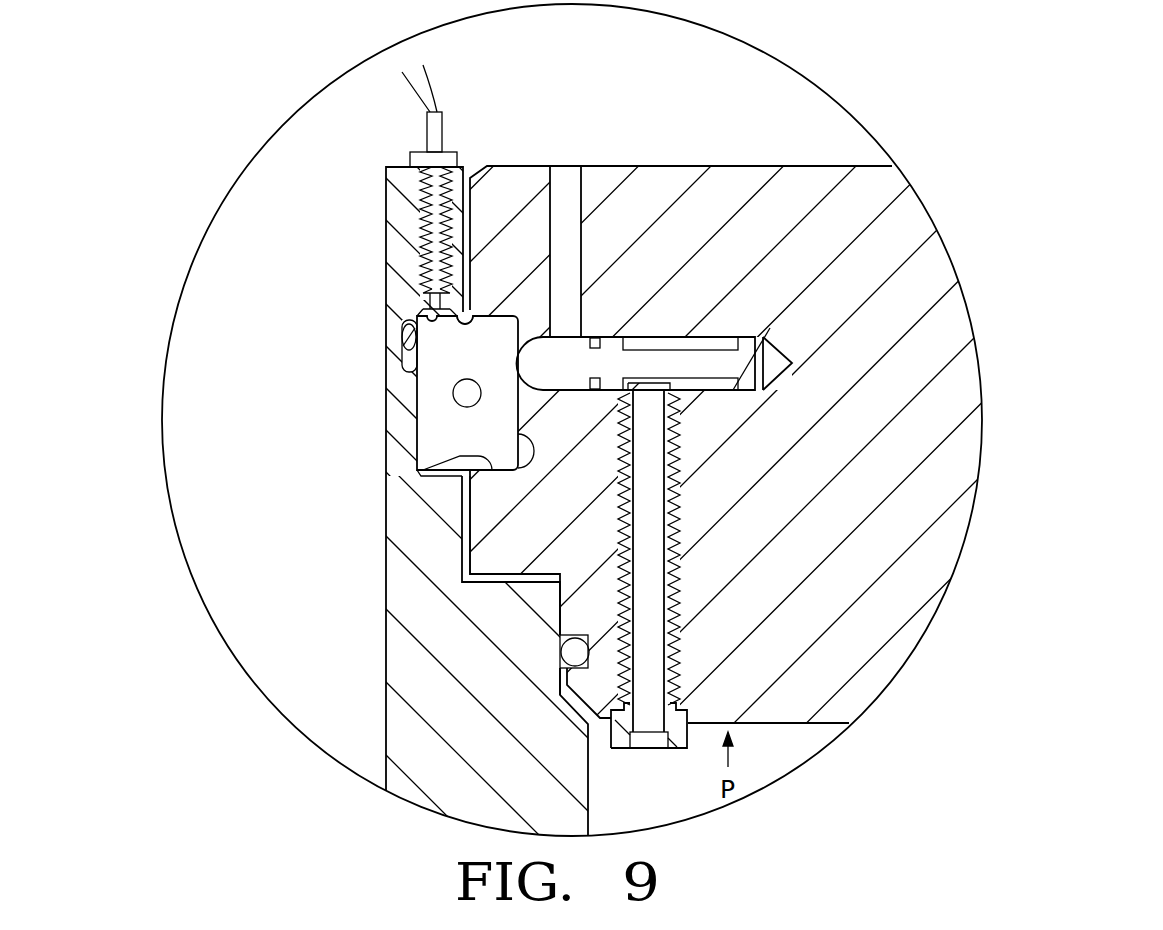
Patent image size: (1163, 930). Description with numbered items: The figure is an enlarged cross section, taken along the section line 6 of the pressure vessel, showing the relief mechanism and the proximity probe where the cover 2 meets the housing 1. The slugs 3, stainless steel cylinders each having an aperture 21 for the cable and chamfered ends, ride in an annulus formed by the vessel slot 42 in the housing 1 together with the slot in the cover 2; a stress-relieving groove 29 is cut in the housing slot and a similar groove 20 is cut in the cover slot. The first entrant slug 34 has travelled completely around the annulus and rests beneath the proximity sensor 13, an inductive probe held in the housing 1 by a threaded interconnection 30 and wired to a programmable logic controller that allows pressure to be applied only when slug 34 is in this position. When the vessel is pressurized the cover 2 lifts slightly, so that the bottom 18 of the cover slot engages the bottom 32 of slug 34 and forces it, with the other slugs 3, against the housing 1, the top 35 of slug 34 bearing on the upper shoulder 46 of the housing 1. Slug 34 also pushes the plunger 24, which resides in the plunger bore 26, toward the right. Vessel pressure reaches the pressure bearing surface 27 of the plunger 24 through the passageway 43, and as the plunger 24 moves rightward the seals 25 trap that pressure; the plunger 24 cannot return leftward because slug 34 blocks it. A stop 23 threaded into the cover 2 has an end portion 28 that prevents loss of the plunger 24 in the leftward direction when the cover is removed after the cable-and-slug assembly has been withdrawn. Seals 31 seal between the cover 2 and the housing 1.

The housing 1 is at (400, 213).
The cover 2 is at (905, 505).
The slugs 3 is at (433, 446).
The section line 6 is at (549, 185).
The proximity sensor 13 is at (445, 150).
The bottom of cover slot 18 is at (447, 463).
The groove 20 is at (517, 445).
The aperture 21 is at (455, 396).
The stop 23 is at (621, 738).
The plunger 24 is at (575, 374).
The seals 25 is at (597, 337).
The plunger bore 26 is at (765, 335).
The pressure bearing surface 27 is at (617, 338).
The end portion 28 is at (632, 386).
The groove 29 is at (400, 371).
The threaded interconnection 30 is at (424, 264).
The seals 31 is at (577, 650).
The bottom of slug 32 is at (462, 535).
The first entrant slug 34 is at (470, 374).
The top of slug 35 is at (405, 322).
The vessel slot 42 is at (432, 470).
The passageway 43 is at (647, 697).
The upper shoulder 46 is at (475, 310).